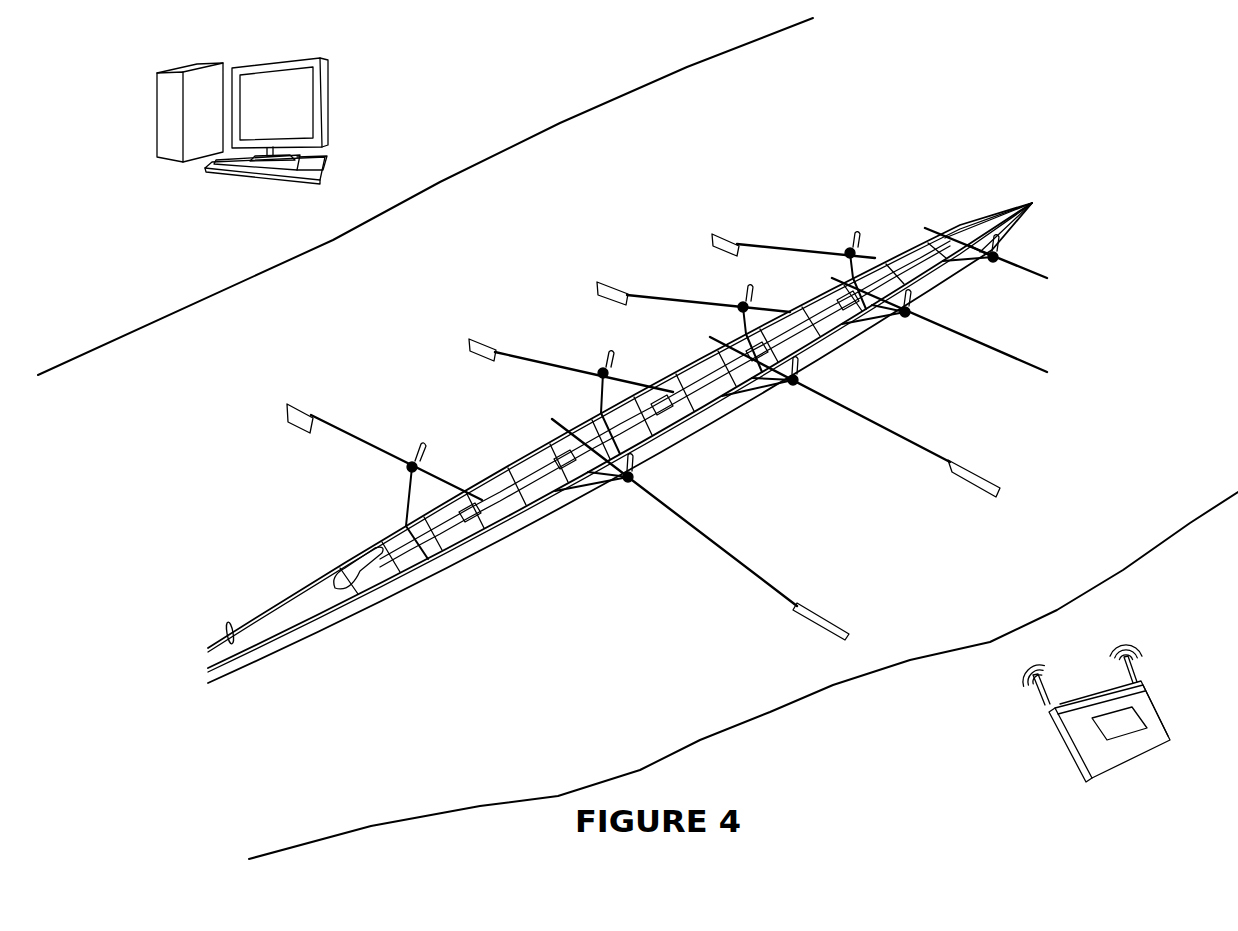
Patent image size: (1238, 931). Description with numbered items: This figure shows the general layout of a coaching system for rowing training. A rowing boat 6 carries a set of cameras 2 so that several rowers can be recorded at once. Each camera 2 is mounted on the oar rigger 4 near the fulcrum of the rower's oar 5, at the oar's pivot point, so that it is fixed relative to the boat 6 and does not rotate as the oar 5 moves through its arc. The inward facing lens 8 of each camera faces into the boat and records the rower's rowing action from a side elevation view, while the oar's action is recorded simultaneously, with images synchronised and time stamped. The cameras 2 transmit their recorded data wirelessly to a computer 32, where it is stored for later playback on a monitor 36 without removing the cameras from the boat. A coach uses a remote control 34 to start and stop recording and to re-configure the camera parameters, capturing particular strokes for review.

The camera 2 is at (424, 458).
The oar rigger 4 is at (400, 500).
The oar 5 is at (330, 440).
The rowing boat 6 is at (710, 405).
The inward facing lens 8 is at (420, 444).
The computer 32 is at (253, 155).
The remote control 34 is at (1052, 748).
The monitor 36 is at (288, 105).